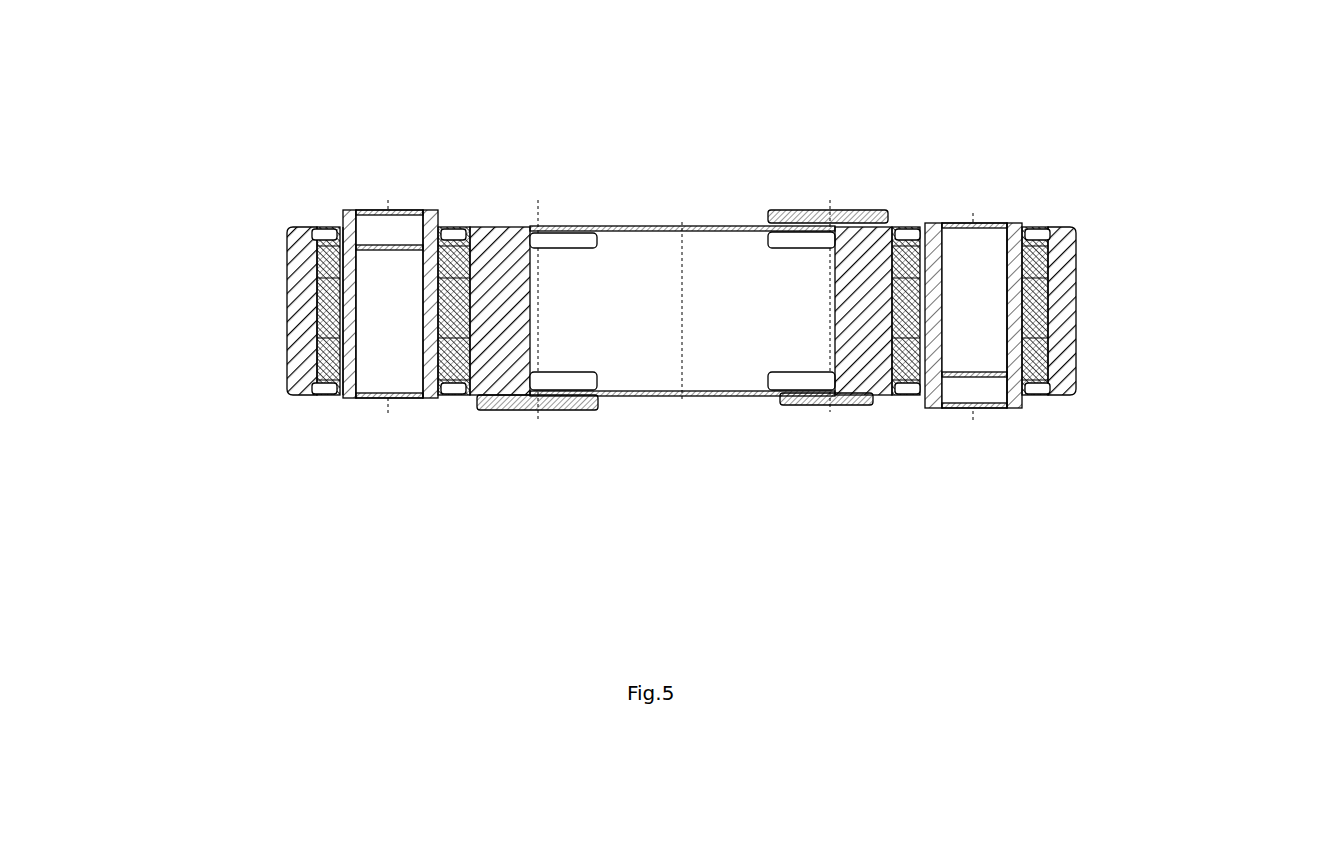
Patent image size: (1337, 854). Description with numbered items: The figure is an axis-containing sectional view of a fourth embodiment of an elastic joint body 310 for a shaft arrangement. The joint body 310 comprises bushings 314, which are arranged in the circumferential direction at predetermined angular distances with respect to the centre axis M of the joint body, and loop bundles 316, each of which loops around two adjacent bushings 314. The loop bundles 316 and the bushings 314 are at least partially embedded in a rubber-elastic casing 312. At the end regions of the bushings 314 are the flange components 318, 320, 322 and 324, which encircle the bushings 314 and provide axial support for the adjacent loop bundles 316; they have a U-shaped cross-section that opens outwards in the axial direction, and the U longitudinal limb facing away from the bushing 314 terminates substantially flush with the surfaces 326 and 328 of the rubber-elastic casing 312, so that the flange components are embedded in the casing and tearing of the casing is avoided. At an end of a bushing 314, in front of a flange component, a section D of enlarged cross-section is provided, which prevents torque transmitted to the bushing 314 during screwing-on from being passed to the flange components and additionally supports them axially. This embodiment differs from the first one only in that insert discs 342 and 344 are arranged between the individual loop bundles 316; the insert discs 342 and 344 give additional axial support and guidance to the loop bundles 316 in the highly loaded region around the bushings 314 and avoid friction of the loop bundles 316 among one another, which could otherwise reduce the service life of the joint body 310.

The joint body 310 is at (1172, 141).
The rubber-elastic casing 312 is at (490, 226).
The bushings 314 is at (452, 227).
The loop bundles 316 is at (287, 263).
The flange component 318 is at (329, 227).
The flange component 320 is at (337, 398).
The flange component 322 is at (1062, 227).
The flange component 324 is at (898, 397).
The surface 326 is at (293, 227).
The surface 328 is at (1072, 397).
The insert disc 342 is at (503, 226).
The insert disc 344 is at (915, 240).
The centre axis M is at (682, 225).
The section of enlarged cross-section D is at (356, 222).